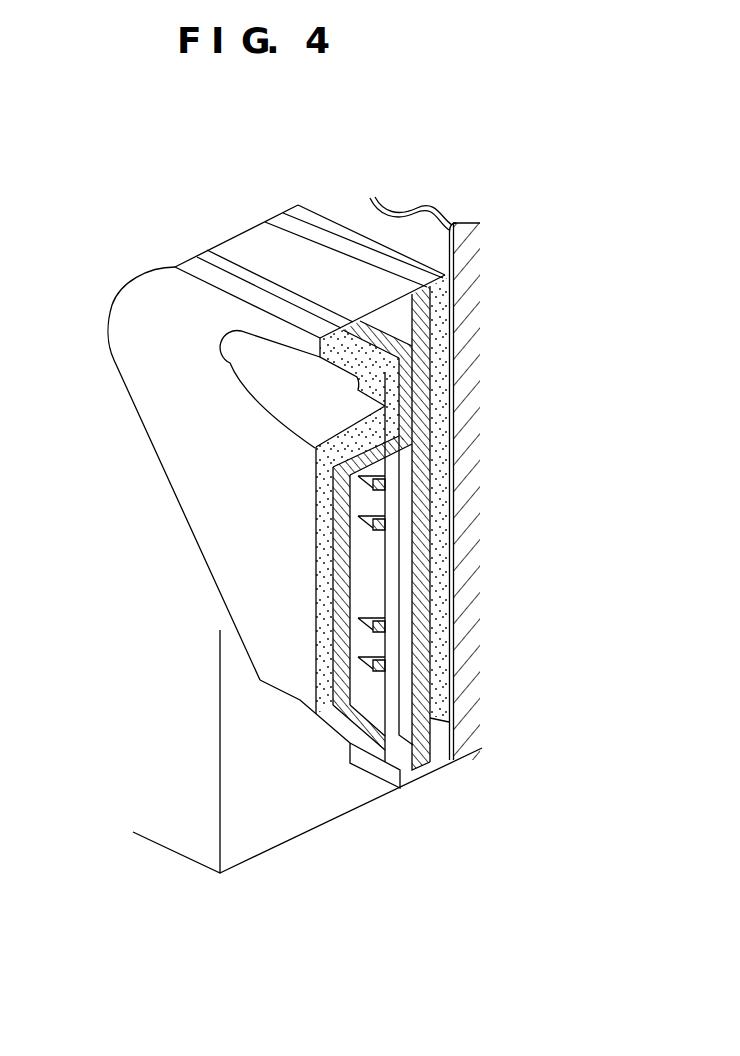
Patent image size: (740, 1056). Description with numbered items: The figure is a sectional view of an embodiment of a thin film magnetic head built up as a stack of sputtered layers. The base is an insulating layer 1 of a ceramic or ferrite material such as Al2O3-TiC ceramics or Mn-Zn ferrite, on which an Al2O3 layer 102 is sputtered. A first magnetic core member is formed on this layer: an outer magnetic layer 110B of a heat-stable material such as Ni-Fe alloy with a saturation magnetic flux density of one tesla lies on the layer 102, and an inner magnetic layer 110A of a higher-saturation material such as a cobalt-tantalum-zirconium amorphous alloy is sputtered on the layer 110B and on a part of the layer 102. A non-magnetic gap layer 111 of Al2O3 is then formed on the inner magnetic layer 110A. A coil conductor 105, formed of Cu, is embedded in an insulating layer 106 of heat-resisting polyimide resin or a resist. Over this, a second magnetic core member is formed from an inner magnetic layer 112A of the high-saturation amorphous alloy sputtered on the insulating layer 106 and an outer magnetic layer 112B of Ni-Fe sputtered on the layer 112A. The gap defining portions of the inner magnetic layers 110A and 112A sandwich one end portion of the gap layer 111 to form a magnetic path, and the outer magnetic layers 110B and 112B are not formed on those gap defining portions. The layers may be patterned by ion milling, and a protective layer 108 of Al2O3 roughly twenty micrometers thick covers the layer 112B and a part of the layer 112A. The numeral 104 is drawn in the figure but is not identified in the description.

The insulating layer 1 is at (465, 637).
The Al2O3 layer 102 is at (455, 600).
The gap layer 104 is at (404, 520).
The coil conductor 105 is at (387, 482).
The insulating layer 106 is at (365, 573).
The protective layer 108 is at (173, 837).
The inner magnetic layer 110A is at (432, 722).
The outer magnetic layer 110B is at (437, 690).
The gap layer 111 is at (420, 770).
The inner magnetic layer 112A is at (345, 620).
The outer magnetic layer 112B is at (332, 676).